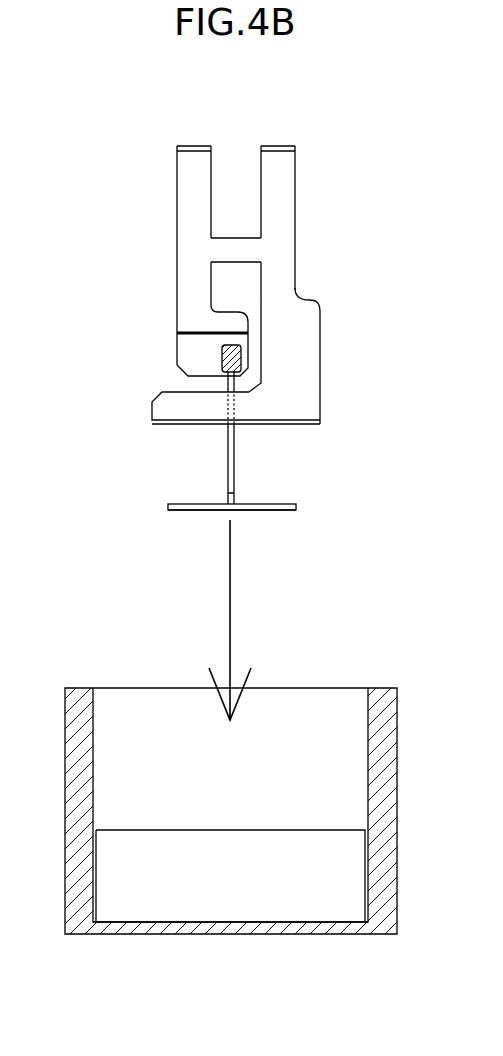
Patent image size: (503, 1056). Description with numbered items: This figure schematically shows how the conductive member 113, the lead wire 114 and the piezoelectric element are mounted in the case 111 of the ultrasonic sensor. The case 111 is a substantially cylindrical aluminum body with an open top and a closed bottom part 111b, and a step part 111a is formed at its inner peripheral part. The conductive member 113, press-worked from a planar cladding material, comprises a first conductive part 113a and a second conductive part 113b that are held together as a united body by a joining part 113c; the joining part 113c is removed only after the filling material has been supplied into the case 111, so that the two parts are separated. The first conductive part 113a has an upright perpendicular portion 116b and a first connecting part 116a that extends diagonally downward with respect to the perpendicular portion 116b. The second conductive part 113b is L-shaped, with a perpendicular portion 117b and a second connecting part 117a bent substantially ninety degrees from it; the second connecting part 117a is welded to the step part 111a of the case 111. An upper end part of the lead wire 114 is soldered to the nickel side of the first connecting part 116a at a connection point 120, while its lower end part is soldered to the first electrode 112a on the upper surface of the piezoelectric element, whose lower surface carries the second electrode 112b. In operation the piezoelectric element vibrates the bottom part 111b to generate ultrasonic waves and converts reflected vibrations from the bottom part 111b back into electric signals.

The case 111 is at (398, 827).
The step part 111a is at (118, 828).
The bottom part 111b is at (238, 934).
The first electrode 112a is at (187, 503).
The second electrode 112b is at (187, 512).
The conductive member 113 is at (238, 232).
The first conductive part 113a is at (187, 177).
The second conductive part 113b is at (283, 211).
The joining part 113c is at (240, 243).
The lead wire 114 is at (234, 468).
The first connecting part 116a is at (185, 341).
The perpendicular portion 116b is at (187, 253).
The second connecting part 117a is at (283, 427).
The perpendicular portion 117b is at (288, 254).
The connection point 120 is at (221, 352).